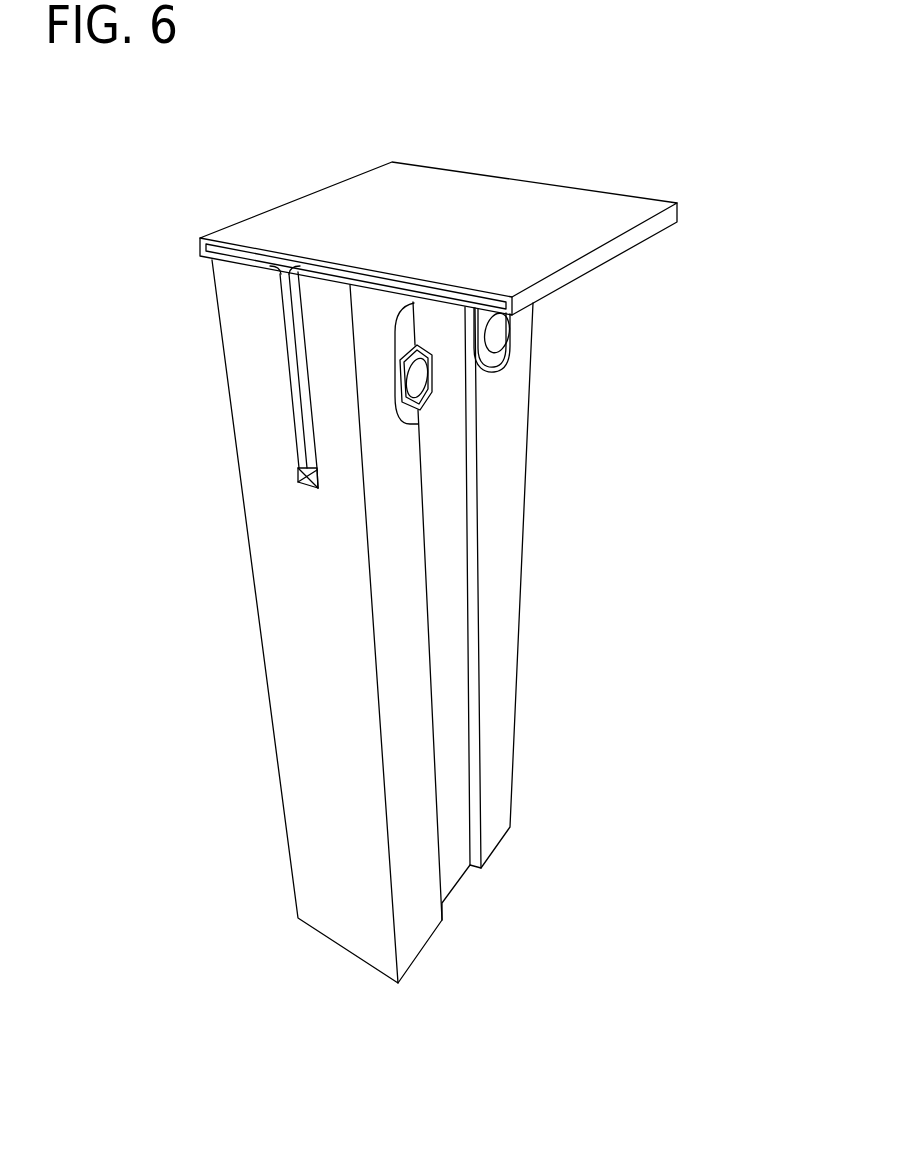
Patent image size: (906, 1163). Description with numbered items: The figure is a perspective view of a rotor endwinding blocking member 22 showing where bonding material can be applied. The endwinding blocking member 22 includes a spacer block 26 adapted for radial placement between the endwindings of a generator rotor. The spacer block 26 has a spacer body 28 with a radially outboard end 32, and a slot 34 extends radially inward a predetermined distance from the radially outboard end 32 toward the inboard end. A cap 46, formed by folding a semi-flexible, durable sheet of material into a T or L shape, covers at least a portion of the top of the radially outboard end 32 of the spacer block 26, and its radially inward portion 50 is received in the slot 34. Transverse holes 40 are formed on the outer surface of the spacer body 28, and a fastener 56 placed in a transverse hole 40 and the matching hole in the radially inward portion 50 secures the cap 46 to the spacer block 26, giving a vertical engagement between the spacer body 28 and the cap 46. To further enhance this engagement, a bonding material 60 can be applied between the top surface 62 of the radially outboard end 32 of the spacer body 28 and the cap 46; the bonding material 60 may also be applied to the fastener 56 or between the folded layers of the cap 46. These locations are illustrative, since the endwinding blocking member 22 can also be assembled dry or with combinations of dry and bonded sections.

The rotor endwinding blocking member 22 is at (698, 149).
The spacer block 26 is at (232, 709).
The spacer body 28 is at (378, 684).
The radially outboard end 32 is at (232, 344).
The slot 34 is at (303, 482).
The transverse hole 40 is at (418, 405).
The cap 46 is at (262, 237).
The radially inward portion 50 is at (297, 357).
The fastener 56 is at (505, 330).
The bonding material 60 is at (283, 313).
The top surface 62 is at (201, 250).